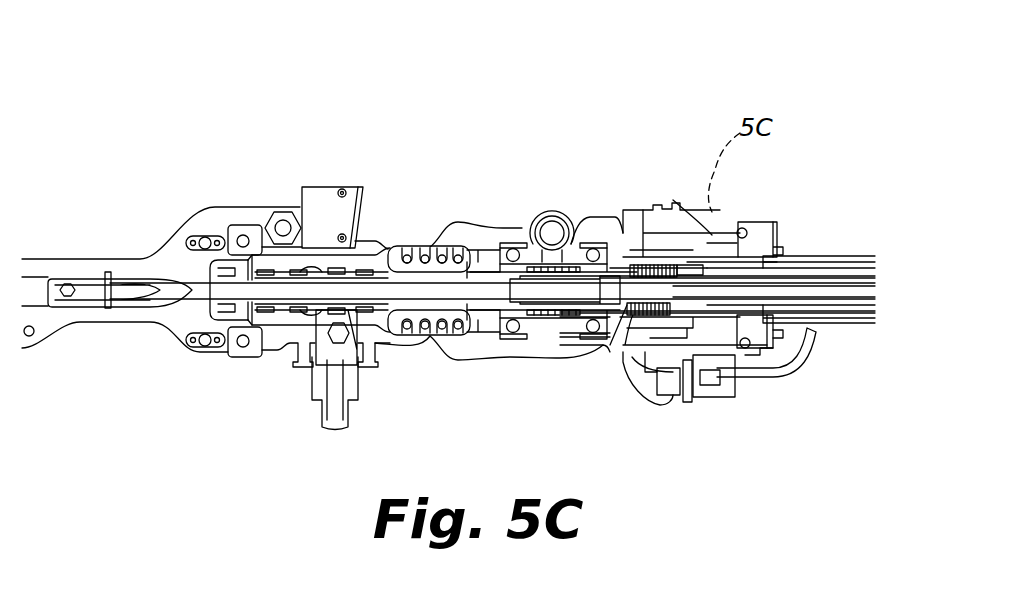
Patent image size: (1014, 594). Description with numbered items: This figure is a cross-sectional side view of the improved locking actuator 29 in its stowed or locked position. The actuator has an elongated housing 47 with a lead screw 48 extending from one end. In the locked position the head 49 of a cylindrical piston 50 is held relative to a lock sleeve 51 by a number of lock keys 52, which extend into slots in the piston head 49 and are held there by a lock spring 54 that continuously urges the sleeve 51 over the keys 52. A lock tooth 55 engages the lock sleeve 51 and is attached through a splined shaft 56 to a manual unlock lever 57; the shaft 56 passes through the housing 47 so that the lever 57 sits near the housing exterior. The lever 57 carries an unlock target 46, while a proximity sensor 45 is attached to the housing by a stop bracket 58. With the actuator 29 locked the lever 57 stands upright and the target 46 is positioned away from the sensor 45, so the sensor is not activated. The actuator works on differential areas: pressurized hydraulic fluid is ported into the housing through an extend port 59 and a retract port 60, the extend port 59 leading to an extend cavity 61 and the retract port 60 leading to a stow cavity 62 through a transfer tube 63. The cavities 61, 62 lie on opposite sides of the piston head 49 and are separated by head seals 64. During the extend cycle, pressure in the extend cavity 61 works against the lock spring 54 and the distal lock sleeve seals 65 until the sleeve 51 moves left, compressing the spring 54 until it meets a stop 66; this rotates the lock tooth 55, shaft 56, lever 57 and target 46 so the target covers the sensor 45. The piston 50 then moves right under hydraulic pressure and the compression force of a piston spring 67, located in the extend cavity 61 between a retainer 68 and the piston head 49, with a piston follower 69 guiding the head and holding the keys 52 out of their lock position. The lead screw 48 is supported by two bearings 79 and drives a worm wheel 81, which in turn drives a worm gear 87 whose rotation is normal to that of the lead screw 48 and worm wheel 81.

The locking actuator 29 is at (168, 92).
The proximity sensor 45 is at (266, 210).
The unlock target 46 is at (314, 190).
The elongated housing 47 is at (455, 226).
The lead screw 48 is at (875, 300).
The piston head 49 is at (735, 245).
The cylindrical piston 50 is at (828, 270).
The lock sleeve 51 is at (470, 248).
The lock keys 52 is at (705, 378).
The lock spring 54 is at (407, 250).
The lock tooth 55 is at (345, 318).
The splined shaft 56 is at (342, 375).
The manual unlock lever 57 is at (366, 200).
The stop bracket 58 is at (170, 257).
The extend port 59 is at (535, 215).
The retract port 60 is at (640, 360).
The extend cavity 61 is at (532, 335).
The stow cavity 62 is at (830, 318).
The transfer tube 63 is at (797, 372).
The head seals 64 is at (780, 262).
The distal lock sleeve seals 65 is at (298, 318).
The stop 66 is at (240, 338).
The piston spring 67 is at (618, 333).
The retainer 68 is at (650, 207).
The piston follower 69 is at (700, 240).
The bearings 79 is at (513, 248).
The worm wheel 81 is at (585, 220).
The worm gear 87 is at (553, 212).